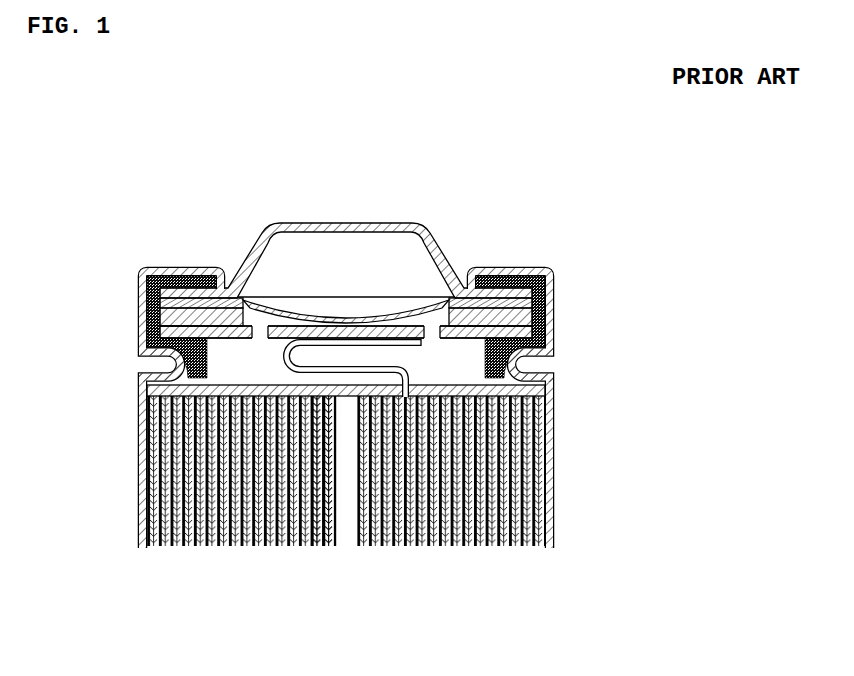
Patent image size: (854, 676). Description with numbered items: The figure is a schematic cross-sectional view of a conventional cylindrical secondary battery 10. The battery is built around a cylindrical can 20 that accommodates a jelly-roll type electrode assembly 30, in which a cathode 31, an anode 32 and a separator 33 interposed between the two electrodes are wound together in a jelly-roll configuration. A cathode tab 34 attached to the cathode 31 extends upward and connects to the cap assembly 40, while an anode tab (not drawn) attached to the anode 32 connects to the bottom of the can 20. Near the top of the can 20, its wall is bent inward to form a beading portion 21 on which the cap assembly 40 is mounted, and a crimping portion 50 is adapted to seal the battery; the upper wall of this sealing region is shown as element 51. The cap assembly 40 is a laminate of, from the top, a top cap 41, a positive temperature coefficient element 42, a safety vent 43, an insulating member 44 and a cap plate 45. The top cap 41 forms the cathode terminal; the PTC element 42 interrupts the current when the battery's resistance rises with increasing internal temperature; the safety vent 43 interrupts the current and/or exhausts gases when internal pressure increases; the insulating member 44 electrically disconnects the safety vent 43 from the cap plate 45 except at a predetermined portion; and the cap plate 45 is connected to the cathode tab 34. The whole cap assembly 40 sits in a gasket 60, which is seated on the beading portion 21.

The cylindrical secondary battery 10 is at (339, 396).
The cylindrical can 20 is at (341, 410).
The beading portion 21 is at (162, 364).
The jelly-roll type electrode assembly 30 is at (346, 520).
The cathode 31 is at (450, 494).
The anode 32 is at (303, 547).
The separator 33 is at (320, 547).
The cathode tab 34 is at (285, 352).
The cap assembly 40 is at (401, 287).
The top cap 41 is at (378, 224).
The positive temperature coefficient (PTC) element 42 is at (334, 297).
The safety vent 43 is at (520, 308).
The insulating member 44 is at (527, 320).
The cap plate 45 is at (535, 340).
The crimping portion 50 is at (293, 307).
The cap housing 51 is at (183, 268).
The gasket 60 is at (150, 309).